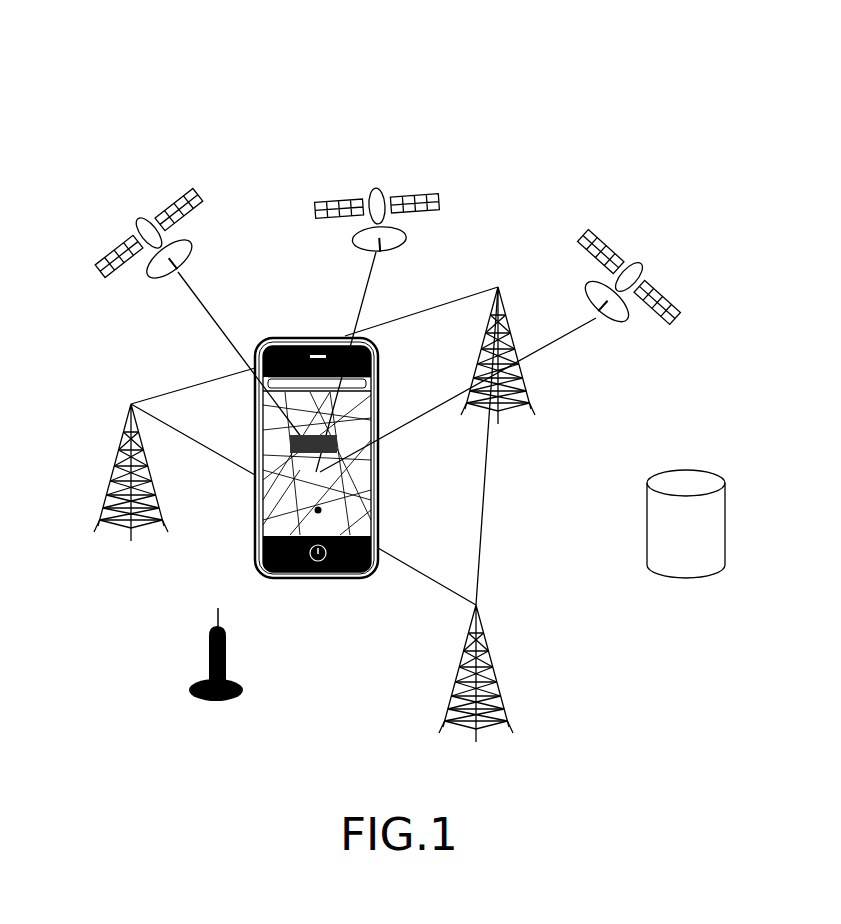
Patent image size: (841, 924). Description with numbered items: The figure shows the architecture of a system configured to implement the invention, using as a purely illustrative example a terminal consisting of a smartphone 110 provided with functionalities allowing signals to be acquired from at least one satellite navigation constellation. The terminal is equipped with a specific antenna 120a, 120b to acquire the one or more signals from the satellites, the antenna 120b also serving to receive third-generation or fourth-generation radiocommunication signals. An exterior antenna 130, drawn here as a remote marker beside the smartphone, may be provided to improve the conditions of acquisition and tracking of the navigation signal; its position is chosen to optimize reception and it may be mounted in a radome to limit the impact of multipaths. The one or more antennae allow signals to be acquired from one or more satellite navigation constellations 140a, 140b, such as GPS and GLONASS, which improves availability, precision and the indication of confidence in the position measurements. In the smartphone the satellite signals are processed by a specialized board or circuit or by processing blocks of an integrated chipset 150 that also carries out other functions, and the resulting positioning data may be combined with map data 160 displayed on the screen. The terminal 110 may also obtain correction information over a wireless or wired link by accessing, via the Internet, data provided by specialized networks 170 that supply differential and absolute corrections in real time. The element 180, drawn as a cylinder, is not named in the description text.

The smartphone 110 is at (263, 503).
The specific antenna 120a is at (277, 334).
The antenna for receiving 3G or 4G radiocommunication signals 120b is at (298, 333).
The exterior antenna 130 is at (237, 692).
The satellite navigation constellation 140a is at (203, 174).
The satellite navigation constellation 140b is at (587, 227).
The integrated chipset 150 is at (380, 446).
The map data 160 is at (318, 510).
The specialized networks 170 is at (120, 430).
The server database 180 is at (675, 558).